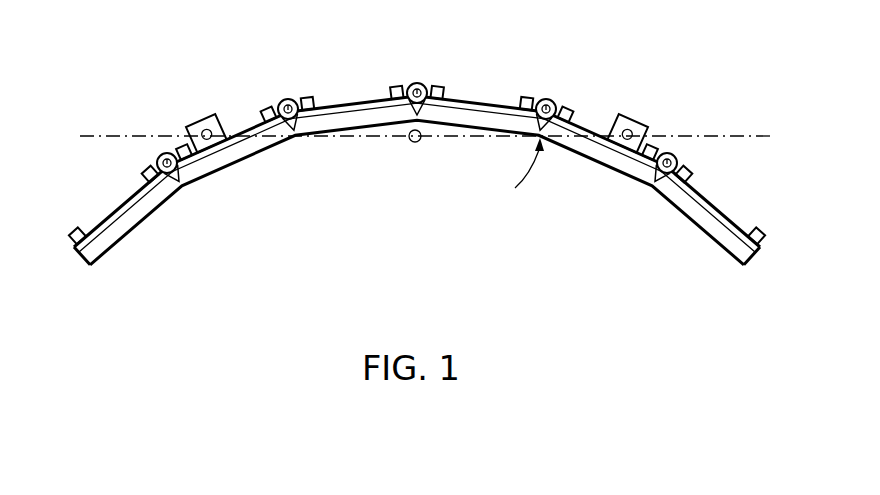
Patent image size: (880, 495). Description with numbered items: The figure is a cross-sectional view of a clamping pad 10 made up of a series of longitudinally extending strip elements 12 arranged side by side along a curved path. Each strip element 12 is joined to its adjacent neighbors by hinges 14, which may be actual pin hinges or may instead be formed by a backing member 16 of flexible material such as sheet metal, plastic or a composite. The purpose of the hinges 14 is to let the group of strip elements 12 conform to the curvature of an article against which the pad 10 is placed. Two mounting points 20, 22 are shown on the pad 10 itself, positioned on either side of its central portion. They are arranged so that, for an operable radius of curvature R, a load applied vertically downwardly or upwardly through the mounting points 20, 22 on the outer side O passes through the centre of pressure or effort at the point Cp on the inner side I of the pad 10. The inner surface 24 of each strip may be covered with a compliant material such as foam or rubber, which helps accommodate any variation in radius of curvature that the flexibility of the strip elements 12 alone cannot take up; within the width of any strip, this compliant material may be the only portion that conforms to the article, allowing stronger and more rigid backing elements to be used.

The clamping pad 10 is at (413, 162).
The strip elements 12 is at (411, 191).
The hinges 14 is at (164, 153).
The backing member 16 is at (124, 209).
The mounting point 20 is at (209, 124).
The mounting point 22 is at (632, 126).
The inner surface 24 is at (113, 247).
The centre of pressure Cp is at (412, 143).
The operable radius of curvature R is at (526, 175).
The outer side O is at (425, 116).
The inner side I is at (750, 298).